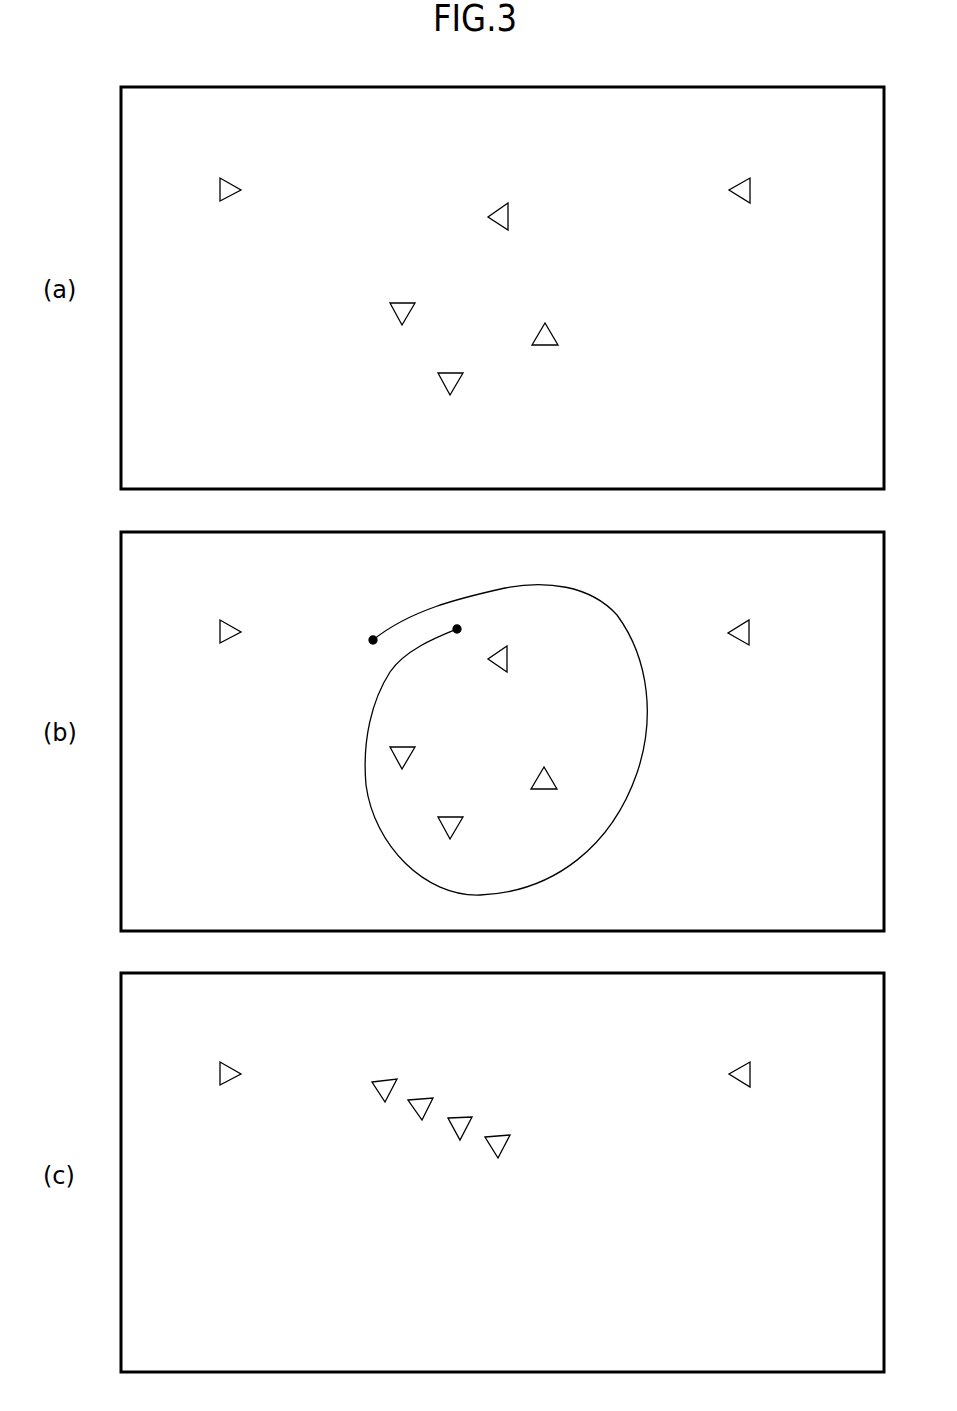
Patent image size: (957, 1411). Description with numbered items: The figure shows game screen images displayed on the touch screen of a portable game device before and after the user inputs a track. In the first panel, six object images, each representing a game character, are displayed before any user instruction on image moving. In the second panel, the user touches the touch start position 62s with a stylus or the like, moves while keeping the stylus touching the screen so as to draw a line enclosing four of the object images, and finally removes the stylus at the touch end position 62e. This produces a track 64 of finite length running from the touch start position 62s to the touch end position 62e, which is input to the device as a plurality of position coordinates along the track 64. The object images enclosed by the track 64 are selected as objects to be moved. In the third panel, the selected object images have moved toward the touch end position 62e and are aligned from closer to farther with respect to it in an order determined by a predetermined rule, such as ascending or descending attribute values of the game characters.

The touch start position 62s is at (460, 626).
The touch end position 62e is at (375, 635).
The track 64 is at (638, 773).